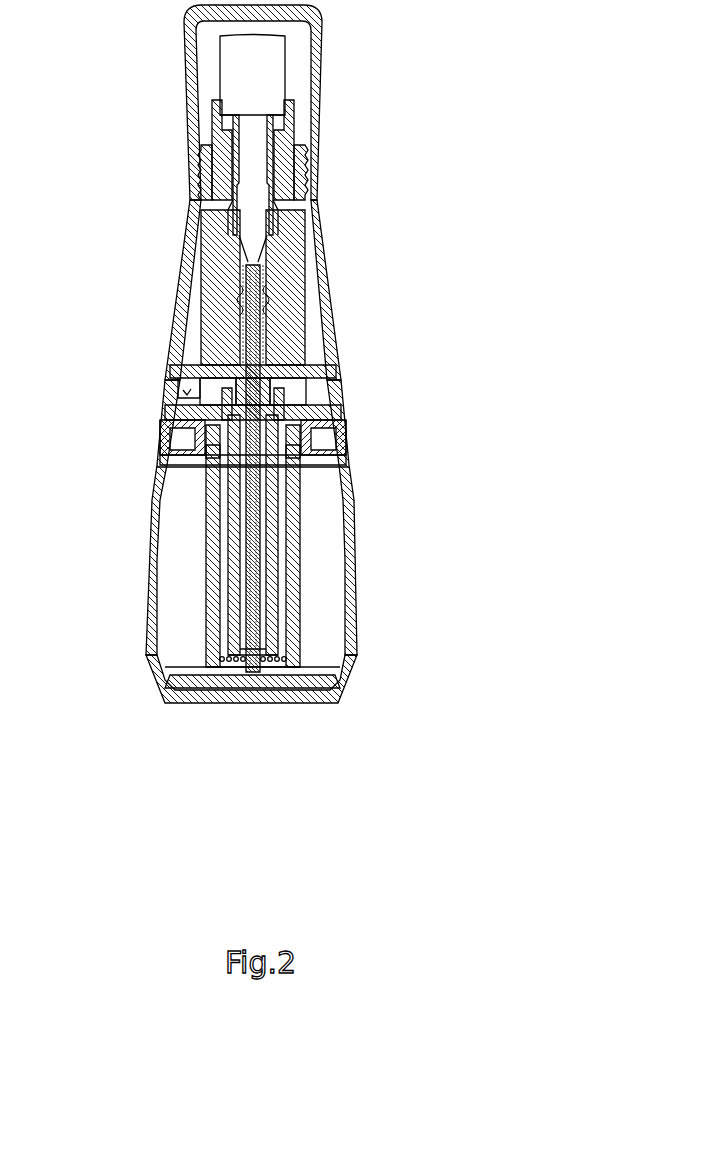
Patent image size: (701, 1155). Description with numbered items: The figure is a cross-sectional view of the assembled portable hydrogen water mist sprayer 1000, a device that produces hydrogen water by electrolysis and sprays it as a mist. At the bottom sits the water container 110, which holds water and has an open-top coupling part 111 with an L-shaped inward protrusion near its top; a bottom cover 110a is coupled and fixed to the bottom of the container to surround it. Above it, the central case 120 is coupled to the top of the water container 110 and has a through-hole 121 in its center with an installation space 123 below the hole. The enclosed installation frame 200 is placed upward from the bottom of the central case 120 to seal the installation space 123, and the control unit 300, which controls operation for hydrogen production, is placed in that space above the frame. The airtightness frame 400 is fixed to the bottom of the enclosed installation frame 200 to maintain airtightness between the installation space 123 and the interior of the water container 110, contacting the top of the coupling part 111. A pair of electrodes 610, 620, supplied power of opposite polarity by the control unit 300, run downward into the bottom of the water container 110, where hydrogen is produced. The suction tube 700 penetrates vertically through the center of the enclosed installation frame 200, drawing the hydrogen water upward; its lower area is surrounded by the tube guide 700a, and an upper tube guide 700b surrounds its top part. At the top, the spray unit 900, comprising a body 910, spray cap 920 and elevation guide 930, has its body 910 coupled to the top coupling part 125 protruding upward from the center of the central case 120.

The portable hydrogen water mist sprayer 1000 is at (134, 827).
The spray unit 900 is at (214, 63).
The spray cap 920 is at (284, 45).
The body 910 is at (310, 120).
The top coupling part 125 is at (313, 140).
The elevation guide 930 is at (266, 235).
The central case 120 is at (329, 293).
The through-hole 121 is at (245, 343).
The installation space 123 is at (182, 390).
The control unit 300 is at (322, 374).
The enclosed installation frame 200 is at (332, 403).
The airtightness frame 400 is at (179, 431).
The upper tube guide 700b is at (297, 453).
The coupling part 111 is at (318, 470).
The water container 110 is at (357, 581).
The bottom cover 110a is at (340, 693).
The suction tube 700 is at (262, 340).
The electrode 610 is at (238, 632).
The electrode 620 is at (287, 510).
The tube guide 700a is at (222, 627).